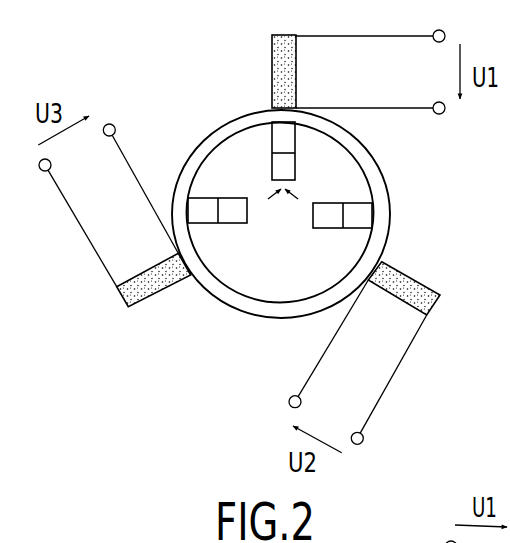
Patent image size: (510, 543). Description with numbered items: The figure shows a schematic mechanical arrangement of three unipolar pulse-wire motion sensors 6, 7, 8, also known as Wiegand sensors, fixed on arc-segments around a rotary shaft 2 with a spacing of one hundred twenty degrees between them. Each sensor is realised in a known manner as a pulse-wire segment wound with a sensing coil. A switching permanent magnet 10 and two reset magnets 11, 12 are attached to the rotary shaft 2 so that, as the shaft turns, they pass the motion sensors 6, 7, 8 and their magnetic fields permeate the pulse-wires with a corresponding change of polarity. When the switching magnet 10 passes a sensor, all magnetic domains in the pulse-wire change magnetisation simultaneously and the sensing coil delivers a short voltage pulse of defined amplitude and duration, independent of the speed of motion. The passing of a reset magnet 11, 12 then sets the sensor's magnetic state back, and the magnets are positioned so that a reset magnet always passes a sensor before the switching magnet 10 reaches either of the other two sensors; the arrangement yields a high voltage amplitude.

The rotary shaft 2 is at (335, 168).
The unipolar pulse-wire motion sensor 6 is at (272, 72).
The unipolar pulse-wire motion sensor 7 is at (418, 280).
The unipolar pulse-wire motion sensor 8 is at (168, 290).
The switching permanent magnet 10 is at (271, 168).
The reset magnet 11 is at (322, 229).
The reset magnet 12 is at (239, 226).